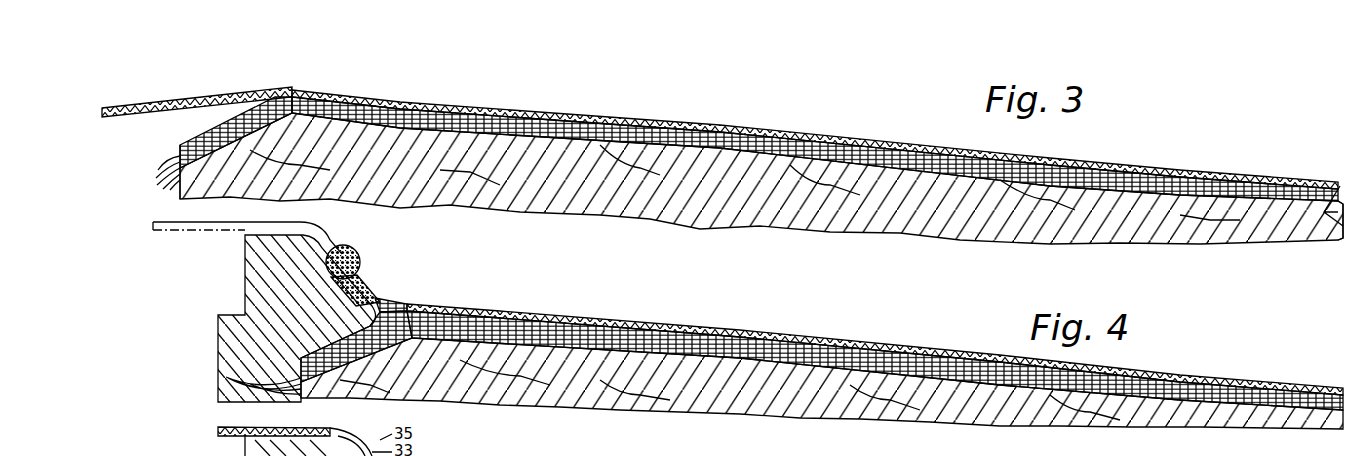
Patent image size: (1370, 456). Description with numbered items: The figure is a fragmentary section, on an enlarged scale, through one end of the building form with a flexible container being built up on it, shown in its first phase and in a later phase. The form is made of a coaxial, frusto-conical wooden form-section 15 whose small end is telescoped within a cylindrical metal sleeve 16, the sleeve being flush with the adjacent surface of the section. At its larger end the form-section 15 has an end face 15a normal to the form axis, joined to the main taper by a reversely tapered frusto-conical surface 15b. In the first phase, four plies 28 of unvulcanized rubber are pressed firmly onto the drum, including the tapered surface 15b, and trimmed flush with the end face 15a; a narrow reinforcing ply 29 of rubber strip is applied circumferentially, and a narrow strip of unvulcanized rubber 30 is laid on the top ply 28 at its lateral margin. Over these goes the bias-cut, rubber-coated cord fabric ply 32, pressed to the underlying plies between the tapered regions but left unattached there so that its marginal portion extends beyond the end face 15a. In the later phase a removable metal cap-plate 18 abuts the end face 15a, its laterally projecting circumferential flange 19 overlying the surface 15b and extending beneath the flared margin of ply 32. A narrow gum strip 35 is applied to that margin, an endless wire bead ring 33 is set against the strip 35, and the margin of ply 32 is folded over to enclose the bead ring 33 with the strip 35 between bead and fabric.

In FIG. 3, the form-section 15 is at (836, 230).
In FIG. 4, the form-section 15 is at (1086, 427).
In FIG. 3, the end face 15a is at (180, 196).
In FIG. 3, the frusto-conical surface 15b is at (260, 104).
In FIG. 3, the cylindrical metal sleeve 16 is at (1320, 240).
In FIG. 4, the cap-plate 18 is at (219, 328).
In FIG. 4, the circumferential flange 19 is at (357, 311).
In FIG. 3, the ply 28 is at (154, 173).
In FIG. 4, the ply 28 is at (226, 378).
In FIG. 3, the reinforcing ply 29 is at (627, 117).
In FIG. 4, the reinforcing ply 29 is at (900, 346).
In FIG. 3, the strip of unvulcanized rubber 30 is at (182, 148).
In FIG. 4, the strip of unvulcanized rubber 30 is at (301, 358).
In FIG. 3, the cord fabric ply 32 is at (408, 100).
In FIG. 4, the cord fabric ply 32 is at (641, 323).
In FIG. 4, the bead ring 33 is at (361, 264).
In FIG. 4, the strip of unvulcanized rubber 35 is at (354, 251).